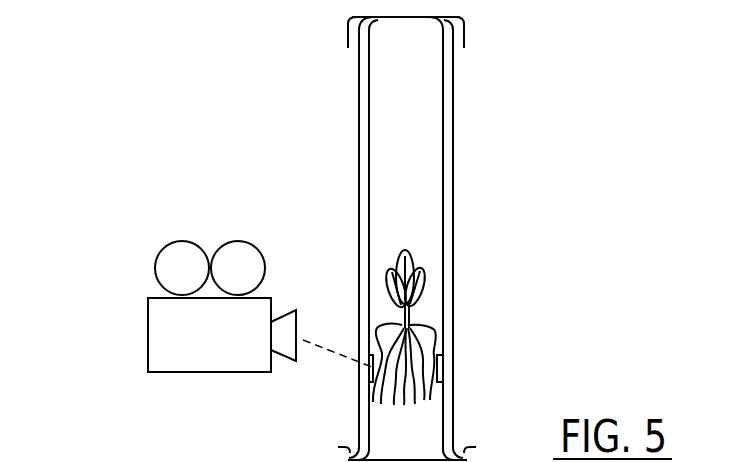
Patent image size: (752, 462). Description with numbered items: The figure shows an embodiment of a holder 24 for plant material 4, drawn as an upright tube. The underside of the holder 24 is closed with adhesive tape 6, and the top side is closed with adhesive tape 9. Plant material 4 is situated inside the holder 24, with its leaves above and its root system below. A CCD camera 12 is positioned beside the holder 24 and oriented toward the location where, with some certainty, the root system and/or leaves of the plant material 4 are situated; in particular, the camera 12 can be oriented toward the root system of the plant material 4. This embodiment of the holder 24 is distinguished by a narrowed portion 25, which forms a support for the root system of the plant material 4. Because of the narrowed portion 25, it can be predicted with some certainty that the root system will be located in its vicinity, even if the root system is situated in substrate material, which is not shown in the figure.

The plant material 4 is at (418, 309).
The adhesive tape 6 is at (353, 455).
The adhesive tape 9 is at (465, 39).
The CCD camera 12 is at (157, 333).
The holder 24 is at (445, 108).
The narrowed portion 25 is at (437, 370).